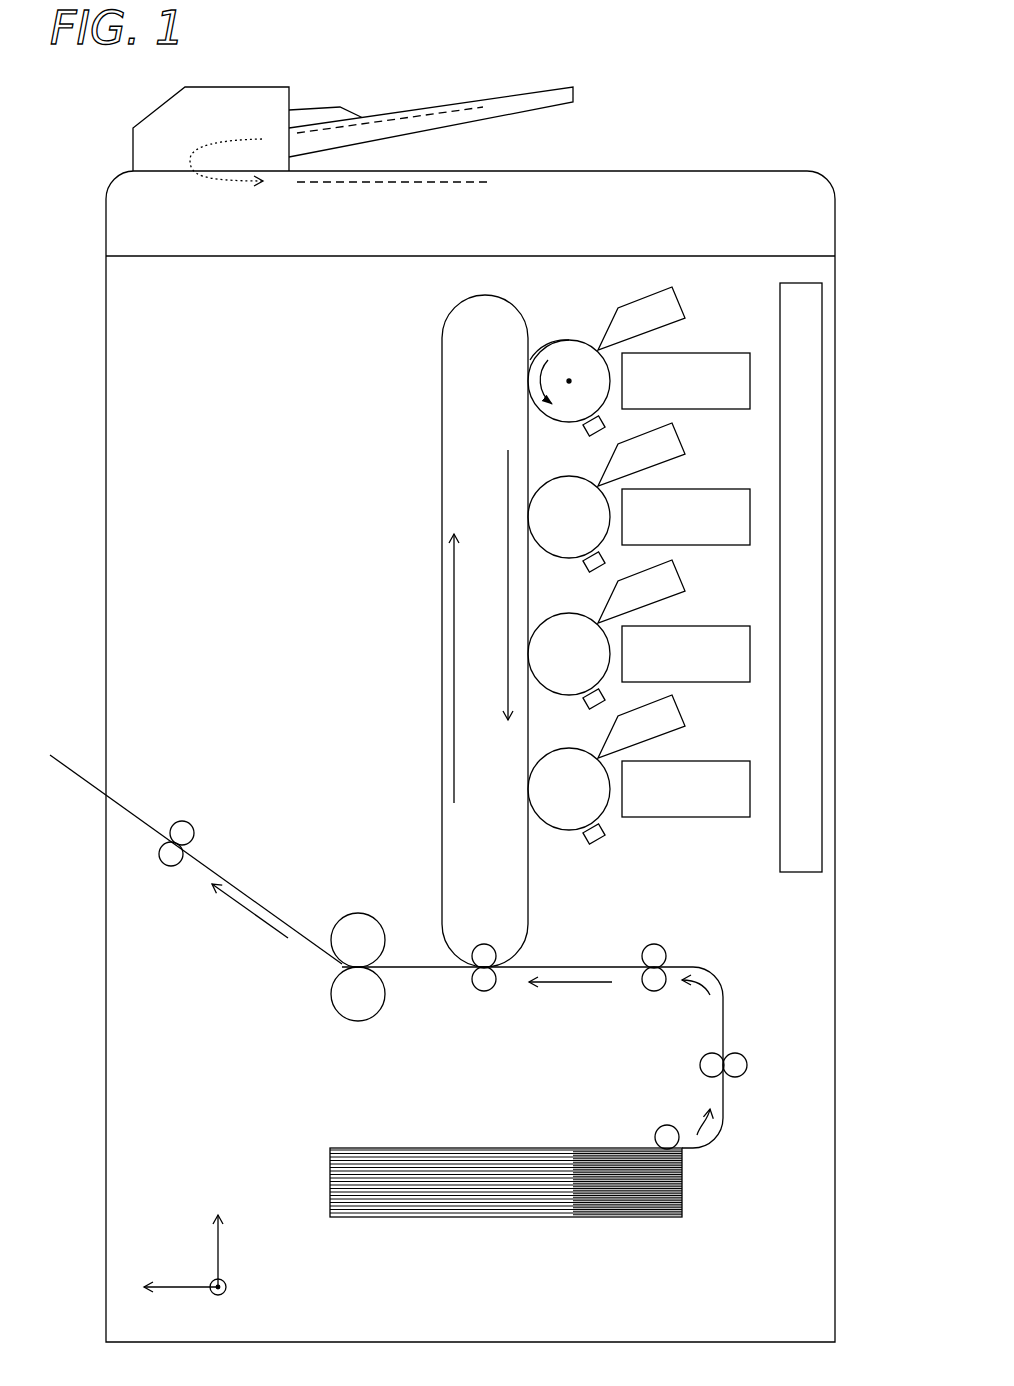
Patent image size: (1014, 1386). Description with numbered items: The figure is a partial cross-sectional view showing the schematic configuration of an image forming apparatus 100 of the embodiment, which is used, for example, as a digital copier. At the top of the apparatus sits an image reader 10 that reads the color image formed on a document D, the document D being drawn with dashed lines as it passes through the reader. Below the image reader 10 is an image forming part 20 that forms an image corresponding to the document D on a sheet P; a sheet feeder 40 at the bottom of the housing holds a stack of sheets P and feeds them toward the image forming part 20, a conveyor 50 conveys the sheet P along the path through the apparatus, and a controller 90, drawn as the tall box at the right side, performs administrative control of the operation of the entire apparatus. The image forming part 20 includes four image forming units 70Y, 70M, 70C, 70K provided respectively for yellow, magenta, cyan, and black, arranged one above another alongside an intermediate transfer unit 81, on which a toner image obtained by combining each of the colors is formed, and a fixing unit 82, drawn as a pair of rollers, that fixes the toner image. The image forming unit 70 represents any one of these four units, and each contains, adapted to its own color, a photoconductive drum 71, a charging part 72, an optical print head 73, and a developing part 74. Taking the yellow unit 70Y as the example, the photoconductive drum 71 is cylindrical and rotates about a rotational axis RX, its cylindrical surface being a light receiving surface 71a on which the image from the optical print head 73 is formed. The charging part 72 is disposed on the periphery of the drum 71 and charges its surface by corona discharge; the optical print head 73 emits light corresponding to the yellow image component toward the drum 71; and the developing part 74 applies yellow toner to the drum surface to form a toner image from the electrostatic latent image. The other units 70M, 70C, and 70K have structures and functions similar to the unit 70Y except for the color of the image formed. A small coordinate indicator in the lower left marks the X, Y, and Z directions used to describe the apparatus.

The image forming apparatus 100 is at (282, 48).
The image reader 10 is at (630, 157).
The document D is at (392, 130).
The image forming part 20 is at (637, 524).
The image forming unit 70 is at (557, 344).
The image forming unit 70Y is at (632, 344).
The image forming unit 70M is at (675, 480).
The image forming unit 70C is at (675, 622).
The image forming unit 70K is at (675, 753).
The photoconductive drum 71 is at (578, 357).
The light receiving surface 71a is at (563, 340).
The rotational axis RX is at (568, 385).
The charging part 72 is at (605, 420).
The optical print head 73 is at (717, 370).
The developing part 74 is at (634, 318).
The intermediate transfer unit 81 is at (425, 483).
The fixing unit 82 is at (358, 905).
The controller 90 is at (803, 445).
The conveyor 50 is at (733, 960).
The sheet feeder 40 is at (525, 1135).
The sheet P is at (415, 1145).
The X axis X is at (168, 1288).
The Y axis Y is at (227, 1300).
The Z axis Z is at (218, 1235).